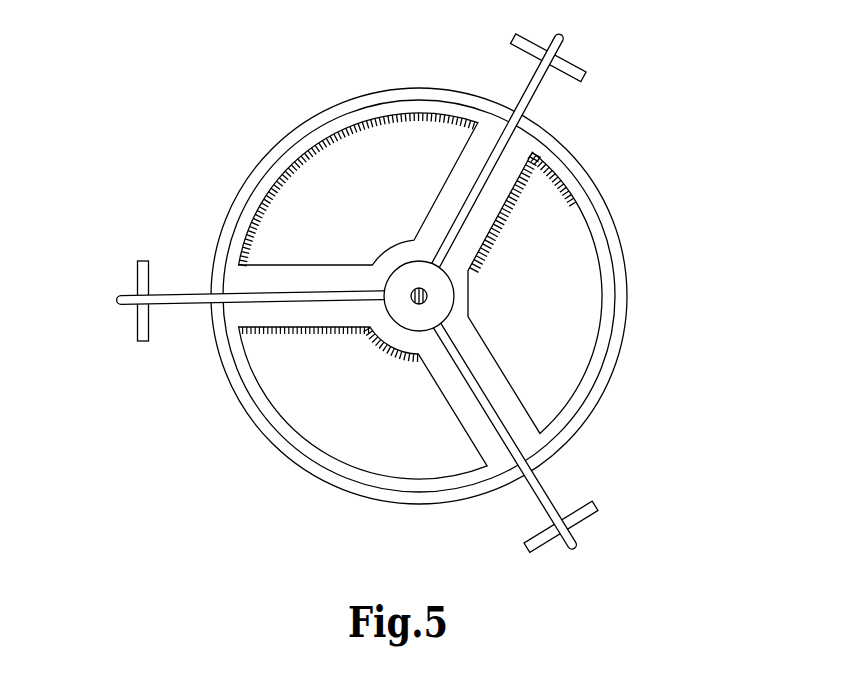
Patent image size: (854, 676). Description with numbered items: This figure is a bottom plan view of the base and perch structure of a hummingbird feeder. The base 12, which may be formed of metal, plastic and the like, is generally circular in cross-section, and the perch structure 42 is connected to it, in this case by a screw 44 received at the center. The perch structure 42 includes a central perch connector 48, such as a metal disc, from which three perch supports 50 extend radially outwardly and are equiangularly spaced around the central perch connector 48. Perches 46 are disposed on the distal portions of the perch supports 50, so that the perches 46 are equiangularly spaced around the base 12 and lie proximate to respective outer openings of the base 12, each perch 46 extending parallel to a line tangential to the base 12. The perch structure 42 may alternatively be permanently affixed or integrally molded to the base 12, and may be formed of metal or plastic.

The base 12 is at (655, 172).
The perch structure 42 is at (470, 286).
The screw 44 is at (407, 297).
The perch 46 is at (145, 258).
The central perch connector 48 is at (413, 256).
The perch support 50 is at (338, 290).